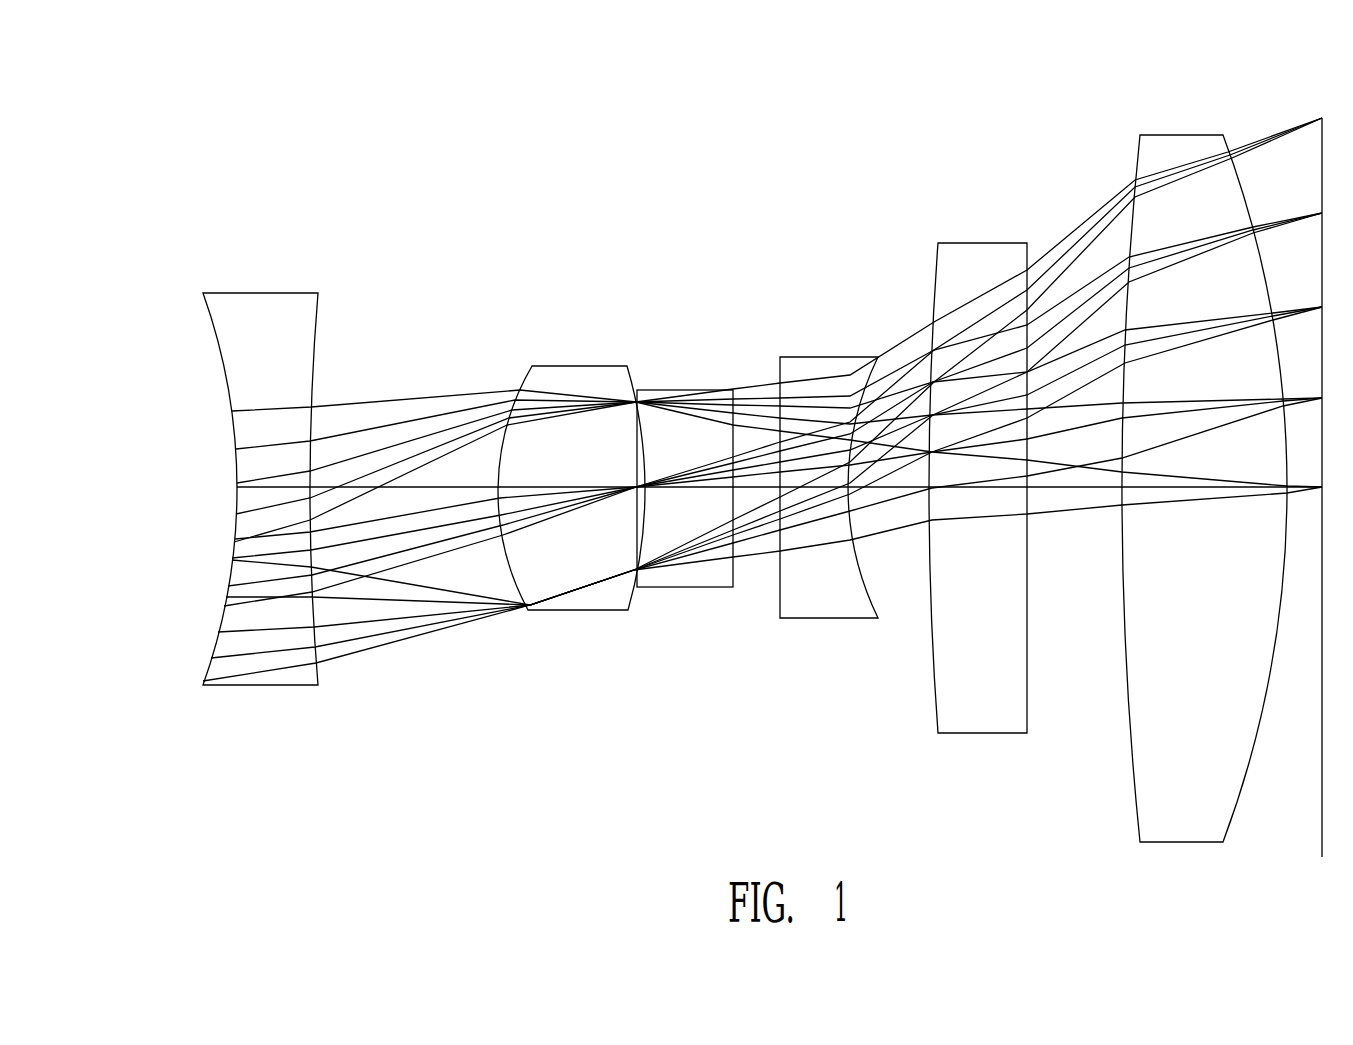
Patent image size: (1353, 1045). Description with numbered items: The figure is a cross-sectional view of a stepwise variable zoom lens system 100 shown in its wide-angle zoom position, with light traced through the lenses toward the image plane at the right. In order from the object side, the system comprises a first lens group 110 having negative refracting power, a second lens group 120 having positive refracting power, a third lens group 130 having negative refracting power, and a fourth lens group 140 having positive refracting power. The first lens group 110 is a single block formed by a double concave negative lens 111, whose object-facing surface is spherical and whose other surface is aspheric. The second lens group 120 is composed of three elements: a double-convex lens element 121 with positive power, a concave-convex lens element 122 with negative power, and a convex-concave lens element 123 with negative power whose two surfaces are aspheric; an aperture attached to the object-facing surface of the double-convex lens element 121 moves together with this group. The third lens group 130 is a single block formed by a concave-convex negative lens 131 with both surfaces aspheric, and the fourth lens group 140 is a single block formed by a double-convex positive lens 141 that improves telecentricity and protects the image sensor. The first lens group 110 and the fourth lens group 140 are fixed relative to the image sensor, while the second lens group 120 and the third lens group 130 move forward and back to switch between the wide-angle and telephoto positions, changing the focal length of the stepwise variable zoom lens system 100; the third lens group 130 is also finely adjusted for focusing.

The stepwise variable zoom lens system 100 is at (292, 118).
The first lens group 110 is at (198, 282).
The double concave negative lens 111 is at (276, 685).
The second lens group 120 is at (863, 343).
The double-convex lens element 121 is at (578, 612).
The concave-convex lens element 122 is at (697, 590).
The convex-concave lens element 123 is at (850, 620).
The third lens group 130 is at (938, 233).
The concave-convex negative lens 131 is at (1000, 735).
The fourth lens group 140 is at (1139, 125).
The double-convex positive lens 141 is at (1196, 845).